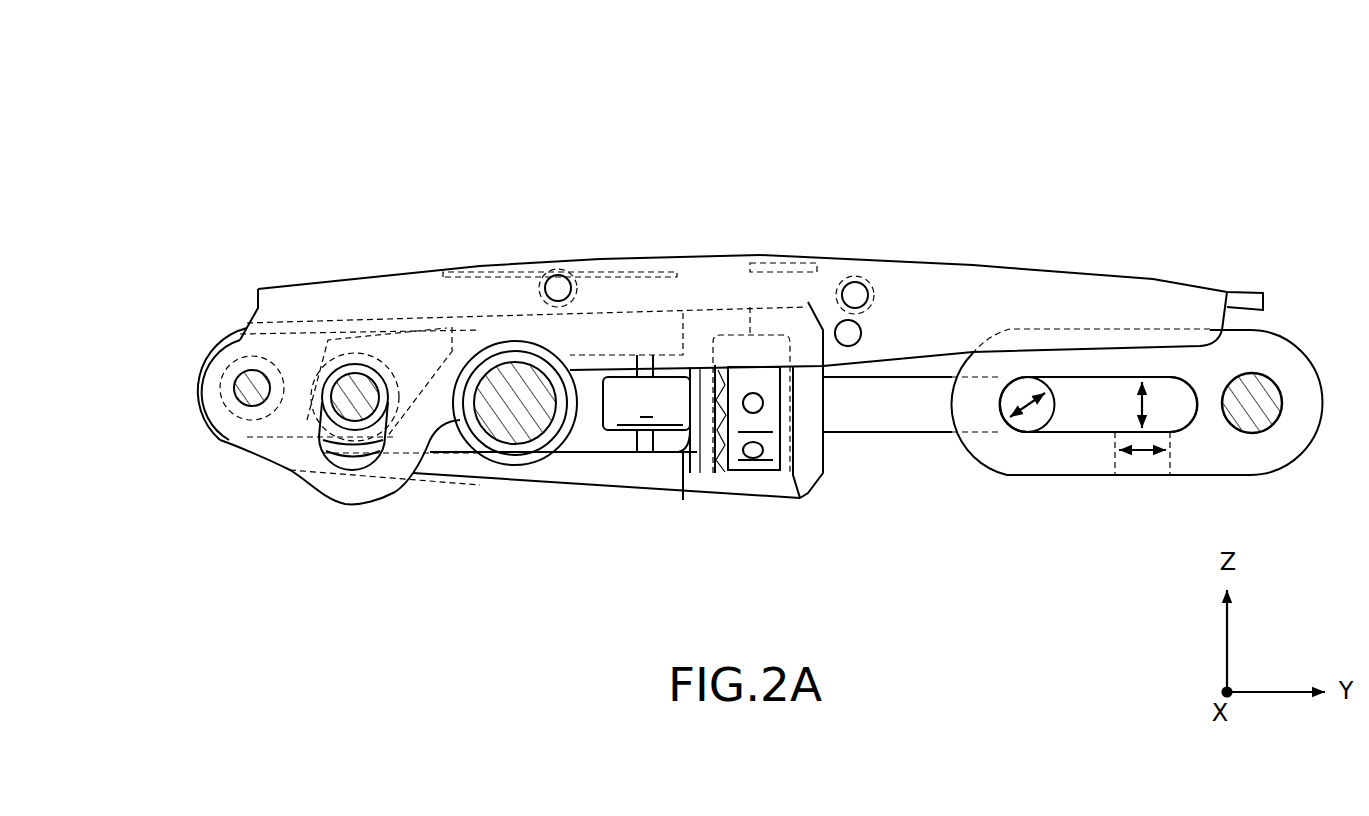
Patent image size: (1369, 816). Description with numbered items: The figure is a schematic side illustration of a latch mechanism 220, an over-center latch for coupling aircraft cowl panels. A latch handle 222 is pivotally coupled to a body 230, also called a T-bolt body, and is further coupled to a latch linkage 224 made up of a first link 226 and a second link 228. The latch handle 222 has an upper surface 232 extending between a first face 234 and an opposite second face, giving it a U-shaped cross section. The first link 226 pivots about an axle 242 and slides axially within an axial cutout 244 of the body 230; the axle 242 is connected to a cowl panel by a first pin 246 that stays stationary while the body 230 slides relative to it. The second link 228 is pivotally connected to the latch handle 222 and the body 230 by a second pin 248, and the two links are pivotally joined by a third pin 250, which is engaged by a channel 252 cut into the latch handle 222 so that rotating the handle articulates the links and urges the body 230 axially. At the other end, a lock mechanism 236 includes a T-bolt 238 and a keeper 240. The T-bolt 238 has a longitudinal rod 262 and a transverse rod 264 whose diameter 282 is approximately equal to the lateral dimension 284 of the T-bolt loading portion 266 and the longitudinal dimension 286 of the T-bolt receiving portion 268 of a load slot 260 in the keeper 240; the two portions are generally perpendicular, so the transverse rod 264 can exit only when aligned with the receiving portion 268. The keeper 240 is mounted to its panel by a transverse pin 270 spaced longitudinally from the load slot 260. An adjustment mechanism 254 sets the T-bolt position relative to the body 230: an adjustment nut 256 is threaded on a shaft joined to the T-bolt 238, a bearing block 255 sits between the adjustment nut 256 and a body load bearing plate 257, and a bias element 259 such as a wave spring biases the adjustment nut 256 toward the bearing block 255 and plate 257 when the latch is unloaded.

The latch mechanism 220 is at (254, 155).
The latch handle 222 is at (972, 265).
The latch linkage 224 is at (238, 454).
The first link 226 is at (397, 343).
The second link 228 is at (278, 350).
The body 230 is at (609, 478).
The upper surface 232 is at (1075, 272).
The first face 234 is at (934, 341).
The lock mechanism 236 is at (998, 532).
The T-bolt 238 is at (1017, 417).
The keeper 240 is at (1058, 460).
The axle 242 is at (513, 445).
The axial cutout 244 is at (630, 455).
The first pin 246 is at (527, 428).
The second pin 248 is at (243, 398).
The third pin 250 is at (355, 395).
The channel 252 is at (357, 467).
The adjustment mechanism 254 is at (760, 532).
The bearing block 255 is at (787, 453).
The adjustment nut 256 is at (773, 447).
The body load bearing plate 257 is at (810, 373).
The bias element 259 is at (721, 473).
The load slot 260 is at (1100, 418).
The longitudinal rod 262 is at (840, 420).
The transverse rod 264 is at (1037, 420).
The T-bolt loading portion 266 is at (1068, 375).
The T-bolt receiving portion 268 is at (1160, 470).
The transverse pin 270 is at (1265, 417).
The diameter 282 is at (1020, 397).
The lateral dimension 284 is at (1147, 403).
The longitudinal dimension 286 is at (1140, 473).